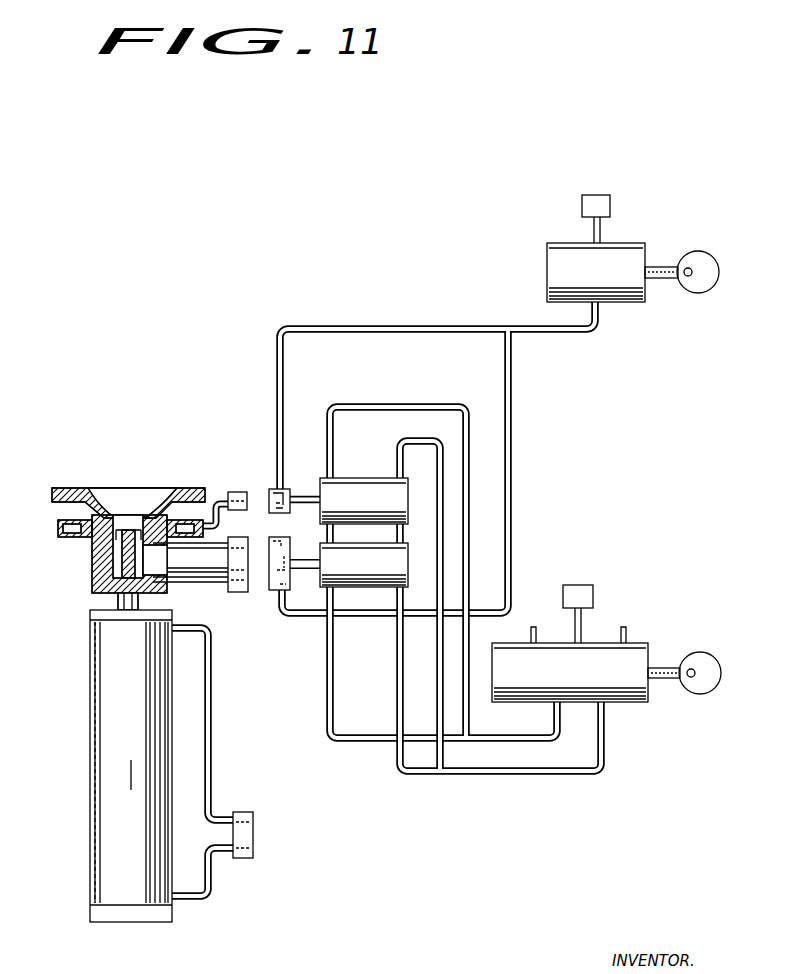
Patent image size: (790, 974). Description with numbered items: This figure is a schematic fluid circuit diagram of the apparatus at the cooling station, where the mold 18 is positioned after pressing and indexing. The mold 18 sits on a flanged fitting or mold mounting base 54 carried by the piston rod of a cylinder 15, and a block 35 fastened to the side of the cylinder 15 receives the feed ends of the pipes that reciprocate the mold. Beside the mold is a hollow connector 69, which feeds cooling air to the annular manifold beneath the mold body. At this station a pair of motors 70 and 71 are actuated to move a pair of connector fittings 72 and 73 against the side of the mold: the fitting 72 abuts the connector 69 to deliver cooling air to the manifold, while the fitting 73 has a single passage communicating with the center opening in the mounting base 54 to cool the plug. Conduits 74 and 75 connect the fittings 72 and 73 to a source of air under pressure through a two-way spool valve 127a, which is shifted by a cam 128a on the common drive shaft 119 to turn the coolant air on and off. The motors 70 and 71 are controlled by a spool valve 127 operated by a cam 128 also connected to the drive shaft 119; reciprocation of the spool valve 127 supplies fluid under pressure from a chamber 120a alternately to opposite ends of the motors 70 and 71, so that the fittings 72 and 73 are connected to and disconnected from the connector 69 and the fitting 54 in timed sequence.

The cylinder 15 is at (103, 723).
The mold 18 is at (63, 490).
The block 35 is at (253, 832).
The flanged fitting 54 is at (236, 588).
The hollow connector 69 is at (237, 487).
The motor 70 is at (377, 452).
The motor 71 is at (378, 578).
The connector fitting 72 is at (275, 488).
The connector fitting 73 is at (281, 583).
The conduit 74 is at (413, 302).
The conduit 75 is at (512, 452).
The common drive shaft 119 is at (688, 277).
The chamber 120a is at (603, 569).
The spool valve 127 is at (587, 653).
The spool valve 127a is at (567, 250).
The cam 128 is at (715, 630).
The cam 128a is at (718, 228).